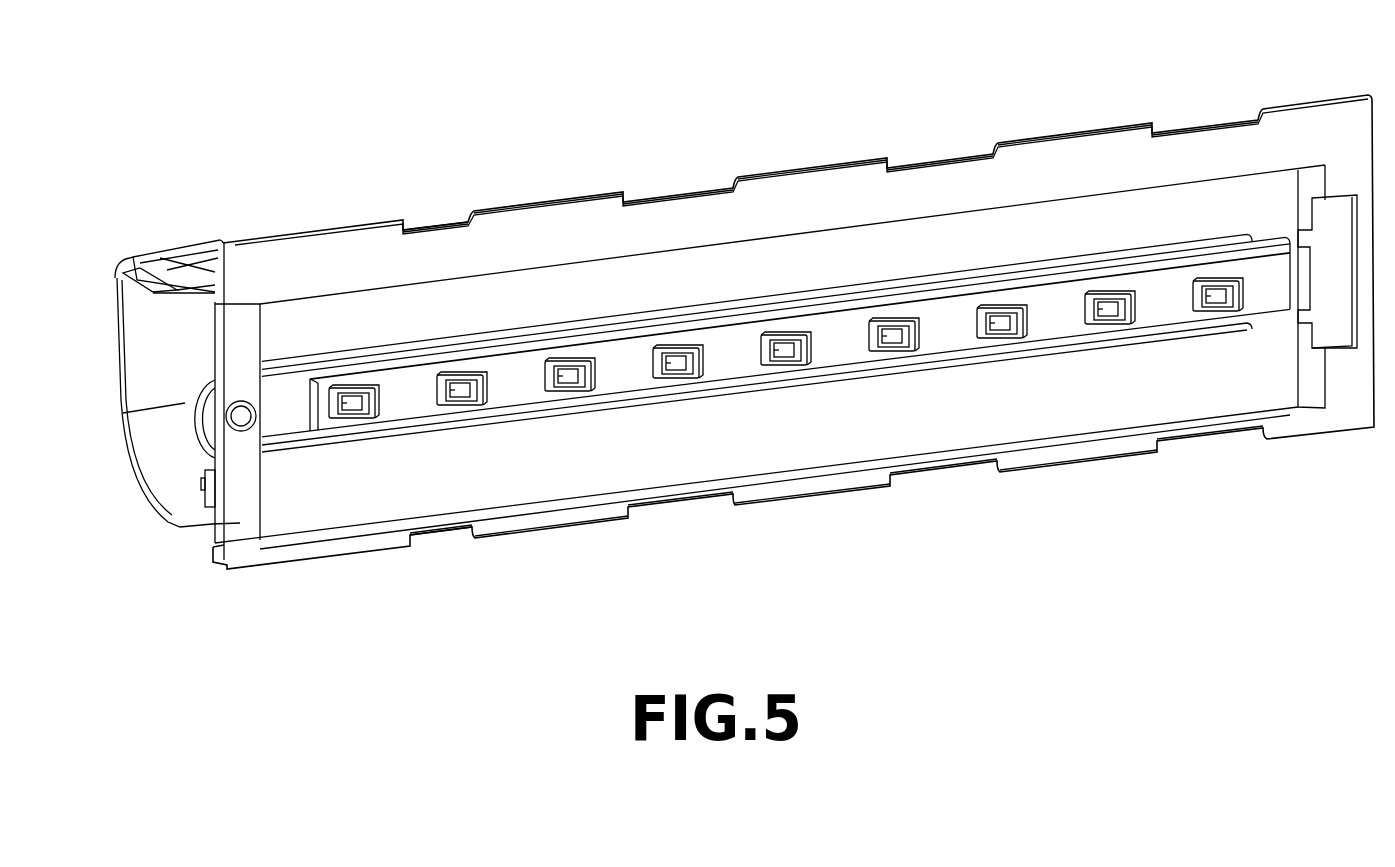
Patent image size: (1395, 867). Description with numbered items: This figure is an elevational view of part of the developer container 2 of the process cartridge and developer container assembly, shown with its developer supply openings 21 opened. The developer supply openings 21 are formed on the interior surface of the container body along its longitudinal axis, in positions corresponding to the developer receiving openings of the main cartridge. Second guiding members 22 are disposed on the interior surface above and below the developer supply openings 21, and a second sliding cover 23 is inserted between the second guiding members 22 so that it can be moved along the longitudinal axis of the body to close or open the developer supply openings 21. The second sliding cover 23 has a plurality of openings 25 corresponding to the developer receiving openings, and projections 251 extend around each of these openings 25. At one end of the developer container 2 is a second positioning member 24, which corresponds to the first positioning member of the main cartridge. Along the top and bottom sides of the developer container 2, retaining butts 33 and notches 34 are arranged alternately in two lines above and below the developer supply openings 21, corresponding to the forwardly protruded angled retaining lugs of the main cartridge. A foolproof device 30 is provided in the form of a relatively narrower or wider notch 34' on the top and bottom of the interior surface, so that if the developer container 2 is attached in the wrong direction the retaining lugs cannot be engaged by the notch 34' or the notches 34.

The developer container 2 is at (265, 258).
The developer supply openings 21 is at (345, 402).
The second guiding members 22 is at (936, 292).
The second sliding cover 23 is at (1050, 325).
The second positioning member 24 is at (238, 430).
The openings 25 is at (372, 406).
The projections 251 is at (467, 373).
The foolproof device 30 is at (437, 378).
The retaining butts 33 is at (585, 200).
The notches 34 is at (963, 303).
The notch 34' is at (449, 371).